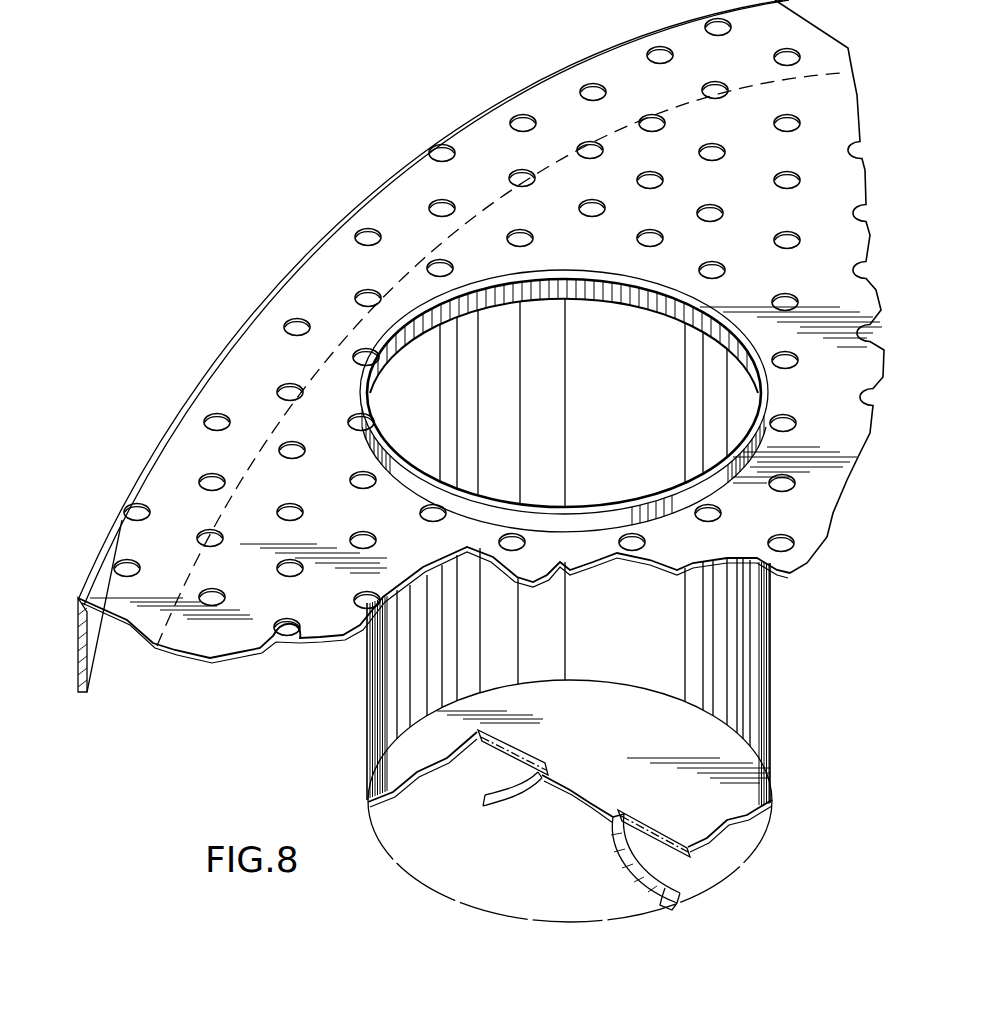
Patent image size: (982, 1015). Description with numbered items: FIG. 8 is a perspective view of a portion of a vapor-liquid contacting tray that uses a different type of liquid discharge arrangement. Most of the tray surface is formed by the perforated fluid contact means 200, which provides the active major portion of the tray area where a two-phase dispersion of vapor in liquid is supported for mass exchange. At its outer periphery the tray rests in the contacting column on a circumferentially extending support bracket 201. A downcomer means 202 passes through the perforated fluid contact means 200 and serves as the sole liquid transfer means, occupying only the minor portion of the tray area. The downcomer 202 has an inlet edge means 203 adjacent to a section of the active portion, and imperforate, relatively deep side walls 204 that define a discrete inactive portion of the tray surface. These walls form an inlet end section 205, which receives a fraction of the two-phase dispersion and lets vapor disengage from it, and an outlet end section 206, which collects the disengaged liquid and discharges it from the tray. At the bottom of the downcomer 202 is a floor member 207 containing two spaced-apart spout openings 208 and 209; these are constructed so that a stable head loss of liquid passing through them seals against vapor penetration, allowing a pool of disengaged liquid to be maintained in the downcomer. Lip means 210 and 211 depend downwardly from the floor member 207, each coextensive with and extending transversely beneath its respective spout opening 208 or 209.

The perforated fluid contact means 200 is at (260, 338).
The support bracket 201 is at (79, 661).
The downcomer means 202 is at (355, 710).
The inlet edge means 203 is at (657, 490).
The side walls 204 is at (773, 652).
The inlet end section 205 is at (600, 317).
The outlet end section 206 is at (750, 793).
The floor member 207 is at (640, 746).
The spout opening 208 is at (525, 752).
The spout opening 209 is at (674, 807).
The lip means 210 is at (494, 807).
The lip means 211 is at (633, 870).